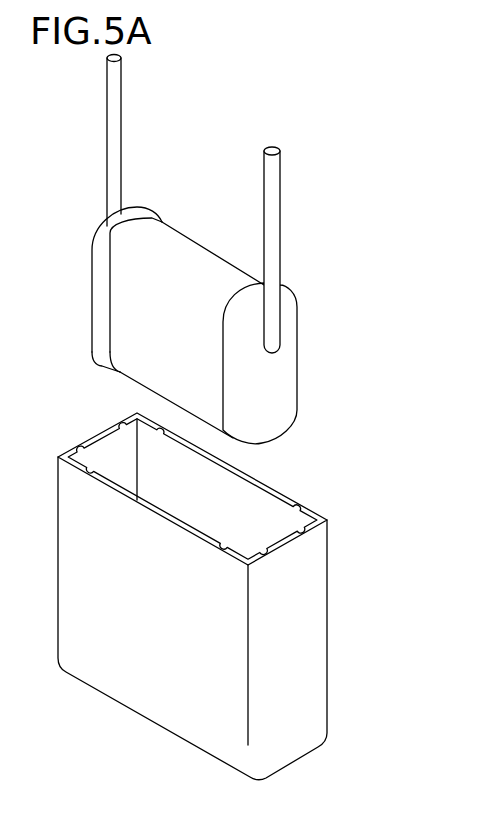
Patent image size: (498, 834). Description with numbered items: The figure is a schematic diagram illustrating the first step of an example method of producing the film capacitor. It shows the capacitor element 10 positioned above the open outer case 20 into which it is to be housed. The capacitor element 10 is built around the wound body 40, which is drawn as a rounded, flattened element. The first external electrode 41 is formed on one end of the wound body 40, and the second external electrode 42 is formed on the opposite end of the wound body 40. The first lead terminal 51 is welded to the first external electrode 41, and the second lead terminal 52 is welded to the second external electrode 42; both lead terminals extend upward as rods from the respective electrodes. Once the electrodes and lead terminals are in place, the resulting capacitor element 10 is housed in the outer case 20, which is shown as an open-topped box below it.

The capacitor element 10 is at (198, 298).
The outer case 20 is at (317, 637).
The wound body 40 is at (133, 347).
The first external electrode 41 is at (97, 303).
The second external electrode 42 is at (283, 383).
The first lead terminal 51 is at (108, 137).
The second lead terminal 52 is at (273, 208).